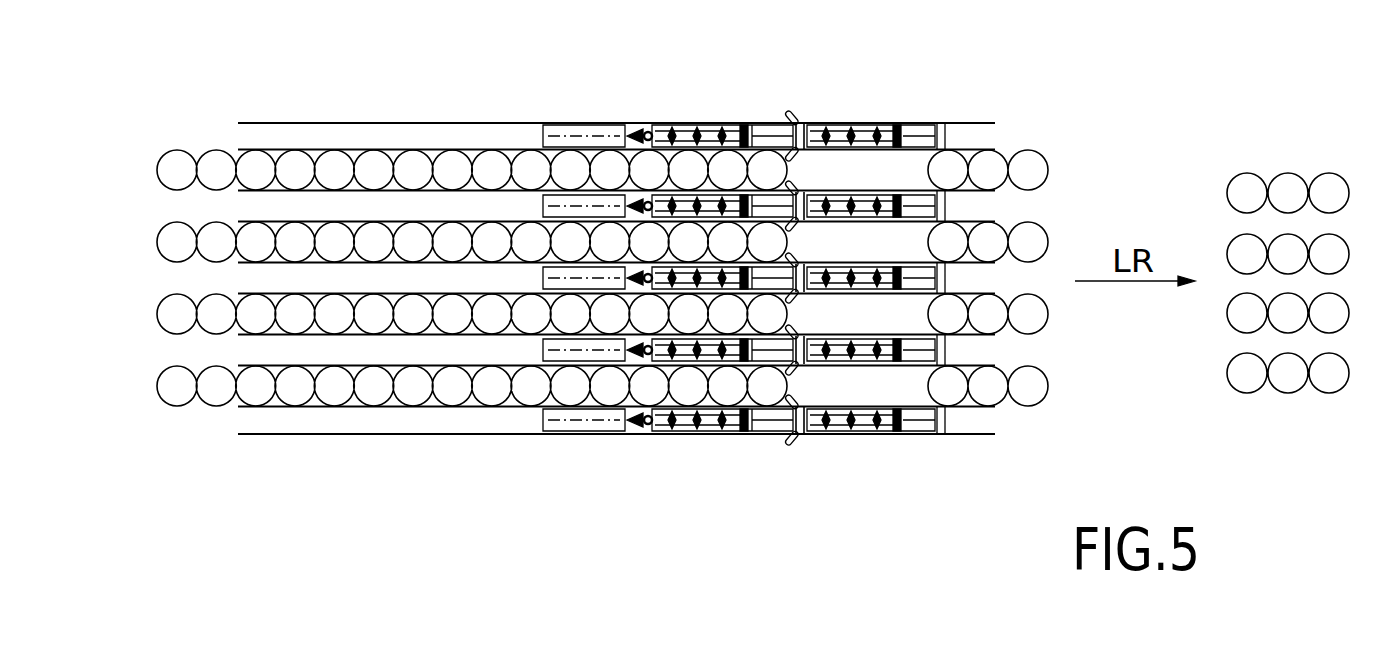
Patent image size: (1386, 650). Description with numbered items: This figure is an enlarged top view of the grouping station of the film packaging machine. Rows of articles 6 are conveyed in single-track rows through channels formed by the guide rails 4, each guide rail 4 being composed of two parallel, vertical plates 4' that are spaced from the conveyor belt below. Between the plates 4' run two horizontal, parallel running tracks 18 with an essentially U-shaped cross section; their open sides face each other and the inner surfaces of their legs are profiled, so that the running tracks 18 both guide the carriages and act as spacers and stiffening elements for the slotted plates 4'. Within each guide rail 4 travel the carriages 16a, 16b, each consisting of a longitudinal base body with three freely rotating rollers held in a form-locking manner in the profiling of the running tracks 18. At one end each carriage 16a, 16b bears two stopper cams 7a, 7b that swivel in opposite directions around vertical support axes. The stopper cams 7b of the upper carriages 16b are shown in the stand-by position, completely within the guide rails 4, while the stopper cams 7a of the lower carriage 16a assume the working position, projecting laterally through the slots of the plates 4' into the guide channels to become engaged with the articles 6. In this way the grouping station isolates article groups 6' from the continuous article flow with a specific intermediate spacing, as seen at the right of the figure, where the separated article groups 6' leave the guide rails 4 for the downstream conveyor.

The guide rails 4 is at (616, 226).
The plates 4' is at (616, 100).
The articles 6 is at (566, 278).
The article groups 6' is at (1288, 226).
The running tracks 18 is at (566, 133).
The stopper cams 7a is at (635, 128).
The stopper cams 7b is at (790, 189).
The carriage 16a is at (707, 114).
The carriage 16b is at (860, 114).